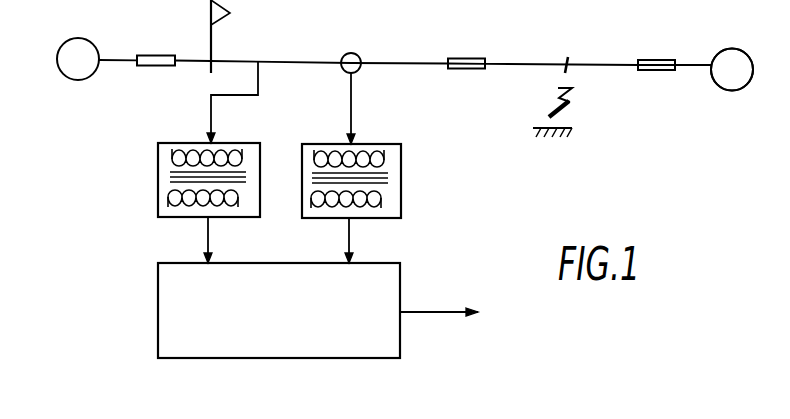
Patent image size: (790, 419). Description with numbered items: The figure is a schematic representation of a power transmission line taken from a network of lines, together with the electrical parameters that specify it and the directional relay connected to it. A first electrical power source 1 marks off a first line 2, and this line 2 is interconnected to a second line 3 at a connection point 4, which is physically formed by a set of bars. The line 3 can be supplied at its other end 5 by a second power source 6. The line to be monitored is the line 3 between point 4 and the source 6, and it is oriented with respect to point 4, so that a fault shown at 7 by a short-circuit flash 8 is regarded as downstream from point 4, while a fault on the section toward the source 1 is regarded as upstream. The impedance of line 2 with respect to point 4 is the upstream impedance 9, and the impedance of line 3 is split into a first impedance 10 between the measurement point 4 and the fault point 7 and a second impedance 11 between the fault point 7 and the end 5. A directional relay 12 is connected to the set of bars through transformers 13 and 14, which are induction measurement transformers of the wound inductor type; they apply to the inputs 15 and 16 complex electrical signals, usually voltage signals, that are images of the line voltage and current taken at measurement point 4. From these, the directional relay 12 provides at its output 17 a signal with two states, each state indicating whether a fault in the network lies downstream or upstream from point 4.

The first electrical power source 1 is at (93, 41).
The first line 2 is at (194, 60).
The second line 3 is at (398, 62).
The connection point 4 is at (215, 58).
The other end of the line 5 is at (725, 50).
The second power source 6 is at (717, 88).
The fault point 7 is at (574, 62).
The short-circuit flash 8 is at (570, 101).
The upstream impedance 9 is at (155, 67).
The first impedance 10 is at (462, 70).
The second impedance 11 is at (653, 59).
The directional relay 12 is at (295, 360).
The transformer 13 is at (158, 173).
The transformer 14 is at (401, 175).
The input 15 is at (207, 238).
The input 16 is at (352, 233).
The output 17 is at (427, 312).